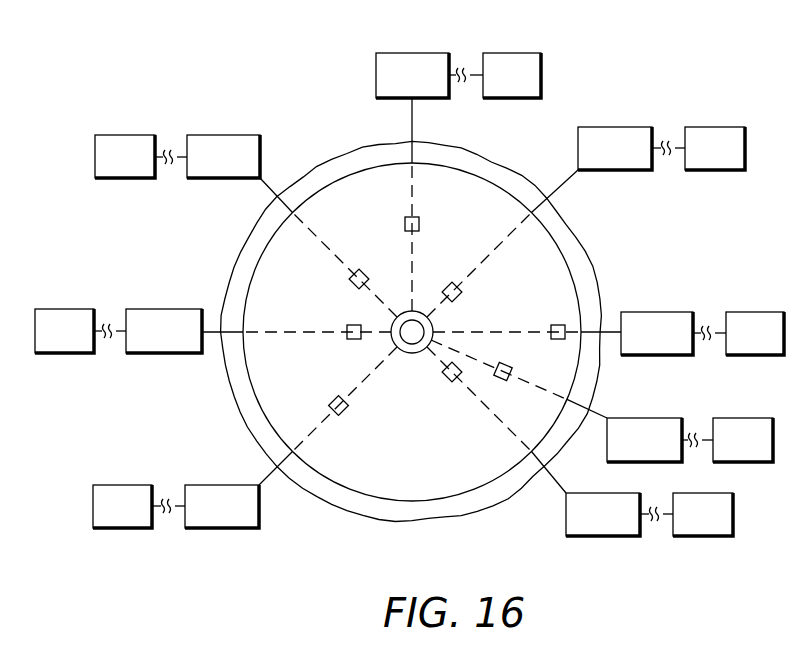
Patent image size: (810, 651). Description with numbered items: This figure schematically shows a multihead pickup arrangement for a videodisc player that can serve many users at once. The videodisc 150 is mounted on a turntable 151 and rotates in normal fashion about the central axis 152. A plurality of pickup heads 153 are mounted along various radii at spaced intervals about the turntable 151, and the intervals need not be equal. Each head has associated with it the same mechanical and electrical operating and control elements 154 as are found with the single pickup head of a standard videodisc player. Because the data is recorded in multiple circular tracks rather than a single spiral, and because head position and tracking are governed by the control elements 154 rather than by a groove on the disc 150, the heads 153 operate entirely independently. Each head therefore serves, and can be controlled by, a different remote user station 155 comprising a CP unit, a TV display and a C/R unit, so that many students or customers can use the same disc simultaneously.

The videodisc 150 is at (365, 497).
The turntable 151 is at (481, 501).
The central axis 152 is at (411, 348).
The pickup heads 153 is at (405, 224).
The operating and control elements 154 is at (232, 150).
The remote user station 155 is at (118, 148).